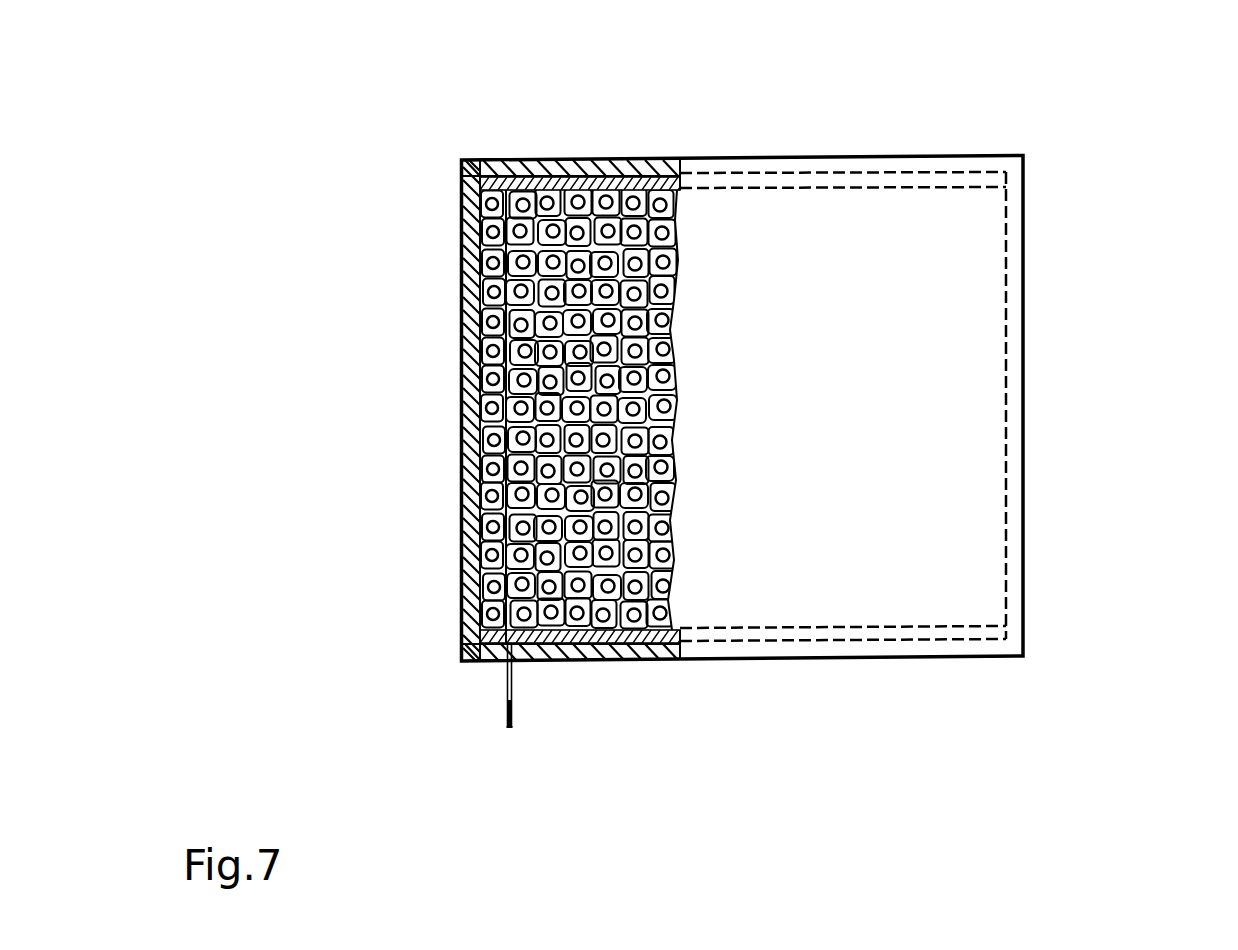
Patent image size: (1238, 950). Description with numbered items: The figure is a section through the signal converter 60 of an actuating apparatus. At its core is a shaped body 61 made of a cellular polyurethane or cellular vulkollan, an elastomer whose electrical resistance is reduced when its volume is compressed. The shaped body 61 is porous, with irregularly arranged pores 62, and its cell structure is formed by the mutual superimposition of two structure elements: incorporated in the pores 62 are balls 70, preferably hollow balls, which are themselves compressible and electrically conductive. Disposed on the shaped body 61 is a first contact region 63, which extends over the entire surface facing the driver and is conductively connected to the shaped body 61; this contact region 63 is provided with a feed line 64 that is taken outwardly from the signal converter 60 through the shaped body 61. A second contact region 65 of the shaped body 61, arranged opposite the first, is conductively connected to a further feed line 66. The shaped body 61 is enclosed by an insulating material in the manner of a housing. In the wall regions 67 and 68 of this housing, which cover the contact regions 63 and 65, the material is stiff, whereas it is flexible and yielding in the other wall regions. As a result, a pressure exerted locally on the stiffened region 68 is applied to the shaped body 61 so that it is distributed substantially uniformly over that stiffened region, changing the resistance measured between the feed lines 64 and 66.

The signal converter 60 is at (342, 361).
The shaped body 61 is at (978, 240).
The pores 62 is at (650, 592).
The first contact region 63 is at (518, 172).
The feed line 64 is at (504, 670).
The second contact region 65 is at (485, 640).
The feed line 66 is at (515, 713).
The wall region 67 is at (470, 485).
The wall region 68 is at (553, 173).
The balls 70 is at (480, 231).